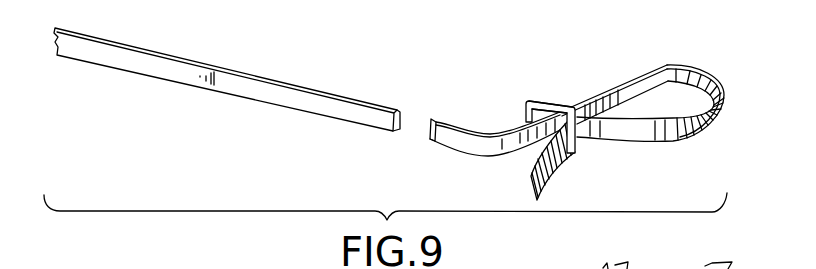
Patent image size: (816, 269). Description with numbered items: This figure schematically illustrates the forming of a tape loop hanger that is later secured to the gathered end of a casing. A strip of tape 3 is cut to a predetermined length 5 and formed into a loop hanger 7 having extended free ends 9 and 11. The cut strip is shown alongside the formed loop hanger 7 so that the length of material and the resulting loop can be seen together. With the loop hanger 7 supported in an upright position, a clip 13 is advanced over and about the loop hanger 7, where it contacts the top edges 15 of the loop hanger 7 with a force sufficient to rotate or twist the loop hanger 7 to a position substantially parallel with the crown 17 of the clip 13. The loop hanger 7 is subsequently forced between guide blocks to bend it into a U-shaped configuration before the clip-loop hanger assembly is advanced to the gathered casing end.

The strip / bar 3 is at (147, 60).
The band clamp 5 is at (579, 106).
The loop end of band 7 is at (684, 73).
The free end strip of band 9 is at (441, 137).
The downturned tab 11 is at (546, 172).
The wire loop buckle 13 is at (519, 97).
The upper strand of band 15 is at (607, 98).
The top bar of buckle 17 is at (557, 101).